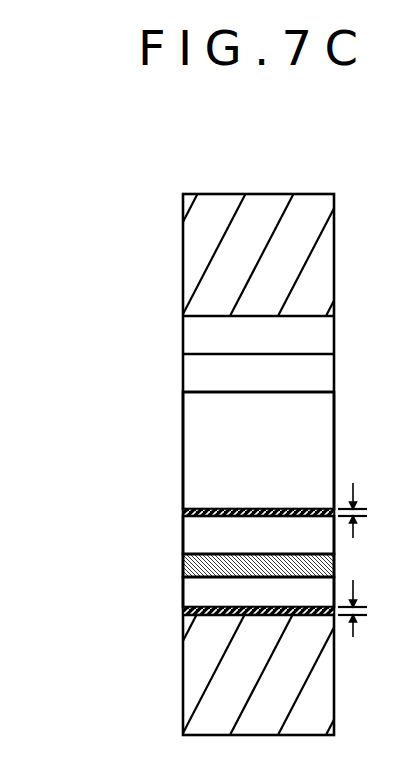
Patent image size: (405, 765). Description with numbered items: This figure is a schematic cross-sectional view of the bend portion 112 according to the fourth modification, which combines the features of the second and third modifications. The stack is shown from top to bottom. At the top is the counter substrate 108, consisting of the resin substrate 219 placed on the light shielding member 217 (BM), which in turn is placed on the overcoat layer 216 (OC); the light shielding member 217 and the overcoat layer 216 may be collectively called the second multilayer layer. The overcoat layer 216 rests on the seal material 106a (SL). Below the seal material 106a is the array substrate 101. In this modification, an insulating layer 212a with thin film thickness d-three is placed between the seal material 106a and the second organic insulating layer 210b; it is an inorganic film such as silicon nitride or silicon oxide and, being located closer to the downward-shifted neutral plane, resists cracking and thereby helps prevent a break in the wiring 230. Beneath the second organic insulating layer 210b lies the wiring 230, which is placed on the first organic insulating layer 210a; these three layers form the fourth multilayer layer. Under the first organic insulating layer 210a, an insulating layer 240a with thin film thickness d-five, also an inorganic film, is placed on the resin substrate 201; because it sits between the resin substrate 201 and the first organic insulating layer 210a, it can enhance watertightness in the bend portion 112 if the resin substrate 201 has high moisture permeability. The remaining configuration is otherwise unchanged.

The bend portion 112 is at (292, 154).
The counter substrate 108 is at (118, 227).
The resin substrate 219 is at (183, 280).
The light shielding member 217 is at (183, 350).
The overcoat layer 216 is at (183, 388).
The seal material 106a is at (183, 432).
The array substrate 101 is at (107, 483).
The insulating layer 212a is at (183, 512).
The second organic insulating layer 210b is at (183, 540).
The wiring 230 is at (183, 567).
The first organic insulating layer 210a is at (183, 598).
The insulating layer 240a is at (183, 612).
The resin substrate 201 is at (183, 705).